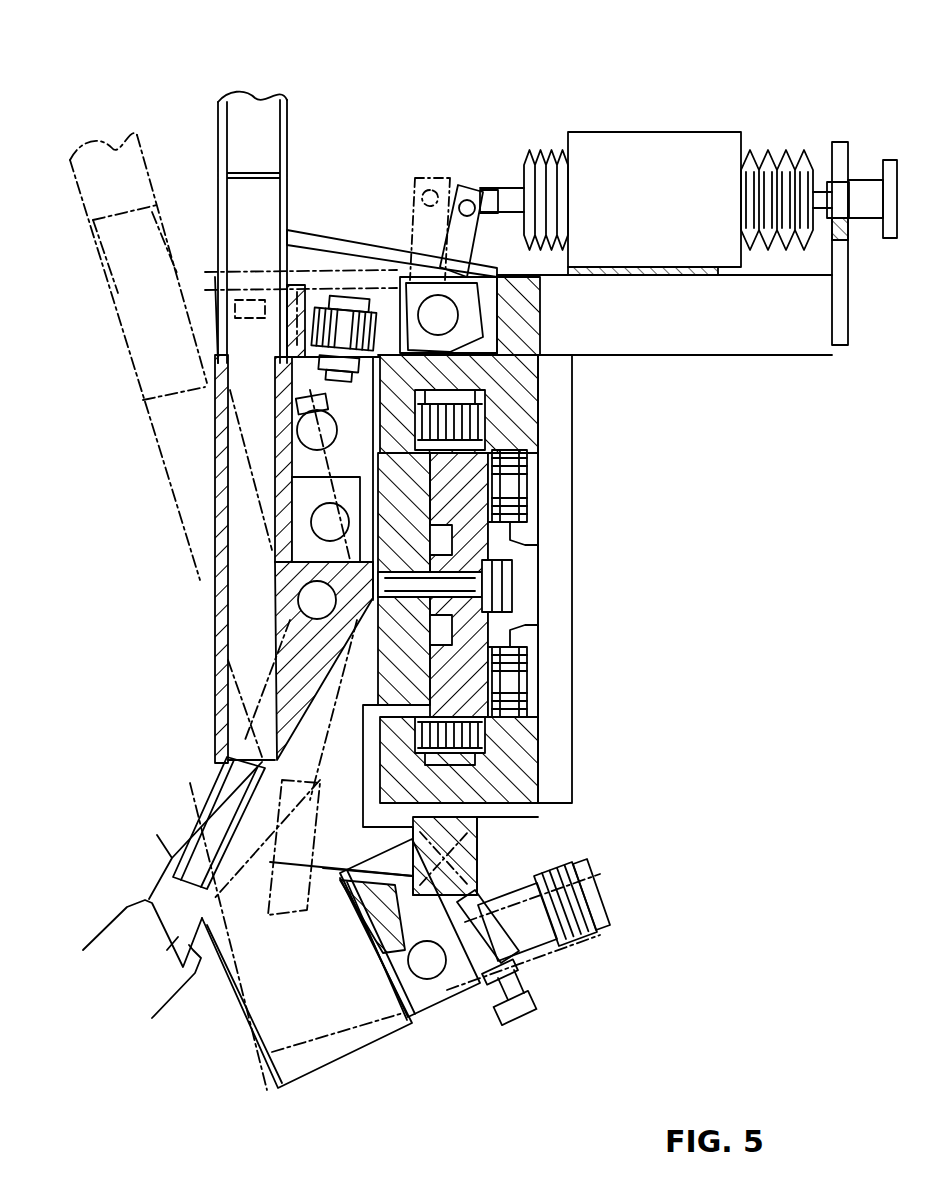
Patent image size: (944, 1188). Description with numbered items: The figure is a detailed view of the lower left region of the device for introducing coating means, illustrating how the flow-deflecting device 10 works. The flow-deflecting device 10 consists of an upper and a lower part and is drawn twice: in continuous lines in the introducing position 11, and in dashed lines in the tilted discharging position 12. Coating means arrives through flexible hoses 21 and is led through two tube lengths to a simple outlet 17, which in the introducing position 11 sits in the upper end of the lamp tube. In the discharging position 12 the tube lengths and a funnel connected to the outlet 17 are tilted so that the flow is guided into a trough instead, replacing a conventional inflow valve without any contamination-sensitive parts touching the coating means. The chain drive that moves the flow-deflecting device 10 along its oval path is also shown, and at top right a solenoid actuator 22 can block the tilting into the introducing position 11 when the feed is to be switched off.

The flow-deflecting device 10 is at (125, 602).
The introducing position 11 is at (220, 456).
The discharging position 12 is at (195, 520).
The outlet 17 is at (178, 938).
The hoses 21 is at (475, 540).
The solenoid actuator 22 is at (652, 155).